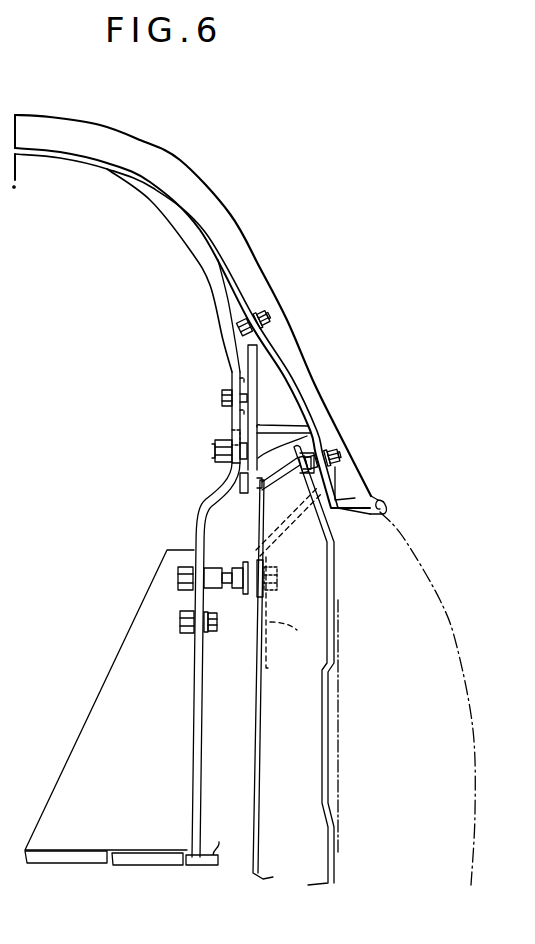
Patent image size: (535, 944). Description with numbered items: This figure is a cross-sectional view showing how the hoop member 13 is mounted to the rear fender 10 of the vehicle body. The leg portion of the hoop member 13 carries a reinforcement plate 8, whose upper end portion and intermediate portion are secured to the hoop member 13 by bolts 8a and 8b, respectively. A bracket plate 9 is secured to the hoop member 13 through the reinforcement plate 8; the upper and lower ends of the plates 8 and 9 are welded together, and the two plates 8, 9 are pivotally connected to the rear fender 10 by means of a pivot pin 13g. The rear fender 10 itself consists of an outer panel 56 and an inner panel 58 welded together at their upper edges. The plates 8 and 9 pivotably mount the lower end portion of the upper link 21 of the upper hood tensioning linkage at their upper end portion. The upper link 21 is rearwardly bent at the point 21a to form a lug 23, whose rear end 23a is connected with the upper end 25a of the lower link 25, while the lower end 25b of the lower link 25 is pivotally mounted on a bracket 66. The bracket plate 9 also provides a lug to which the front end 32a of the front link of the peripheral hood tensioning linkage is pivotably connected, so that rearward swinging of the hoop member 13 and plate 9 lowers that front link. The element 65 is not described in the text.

The hoop member 13 is at (243, 238).
The reinforcement plate 8 is at (287, 396).
The bolt 8a is at (263, 303).
The bolt 8b is at (342, 452).
The bracket plate 9 is at (310, 422).
The upper link 21 is at (212, 285).
The bent point of upper link 21a is at (230, 383).
The lug 23 is at (230, 417).
The rear end of lug 23a is at (228, 436).
The lower link 25 is at (199, 522).
The upper end of lower link 25a is at (216, 452).
The lower end of lower link 25b is at (218, 628).
The front end of front link 32a is at (242, 482).
The pivot pin 13g is at (213, 577).
The bracket 66 is at (112, 692).
The hidden member 65 is at (289, 577).
The rear fender 10 is at (436, 530).
The inner panel 58 is at (340, 720).
The outer panel 56 is at (440, 600).